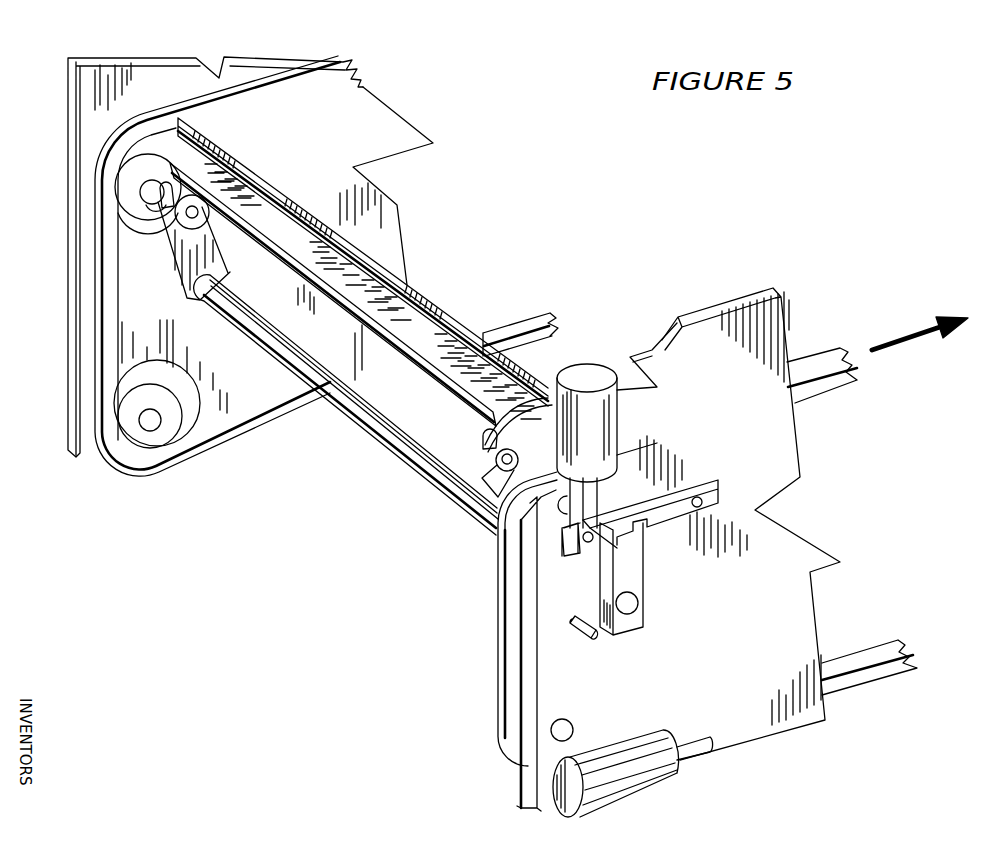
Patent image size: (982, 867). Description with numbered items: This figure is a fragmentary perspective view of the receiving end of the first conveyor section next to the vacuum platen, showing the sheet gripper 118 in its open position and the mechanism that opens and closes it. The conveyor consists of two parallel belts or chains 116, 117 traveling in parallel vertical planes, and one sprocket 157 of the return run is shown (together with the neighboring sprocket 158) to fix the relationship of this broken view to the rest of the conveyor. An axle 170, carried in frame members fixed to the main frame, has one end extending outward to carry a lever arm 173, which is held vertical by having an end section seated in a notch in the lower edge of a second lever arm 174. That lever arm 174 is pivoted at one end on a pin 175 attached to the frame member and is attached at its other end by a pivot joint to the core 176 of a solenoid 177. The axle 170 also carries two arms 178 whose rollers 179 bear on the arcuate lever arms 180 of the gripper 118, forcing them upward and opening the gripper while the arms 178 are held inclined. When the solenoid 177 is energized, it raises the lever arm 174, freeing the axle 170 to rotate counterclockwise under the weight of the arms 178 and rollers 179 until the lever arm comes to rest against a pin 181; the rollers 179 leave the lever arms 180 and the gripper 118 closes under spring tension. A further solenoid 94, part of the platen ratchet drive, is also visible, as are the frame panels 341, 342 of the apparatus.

The left frame panel 341 is at (148, 57).
The right frame panel 342 is at (745, 297).
The belt or chain 117 is at (93, 265).
The belt or chain 116 is at (515, 595).
The sprocket 157 is at (135, 180).
The lower pulley 158 is at (128, 425).
The sheet gripper 118 is at (397, 323).
The arm 178 is at (228, 272).
The roller 179 is at (210, 222).
The arcuate lever arm 180 is at (162, 205).
The axle 170 is at (397, 448).
The solenoid 177 is at (620, 422).
The solenoid core 176 is at (597, 493).
The lever arm 174 is at (680, 480).
The pin 175 is at (726, 505).
The lever arm 173 is at (643, 573).
The pin 181 is at (580, 633).
The solenoid 94 is at (670, 787).